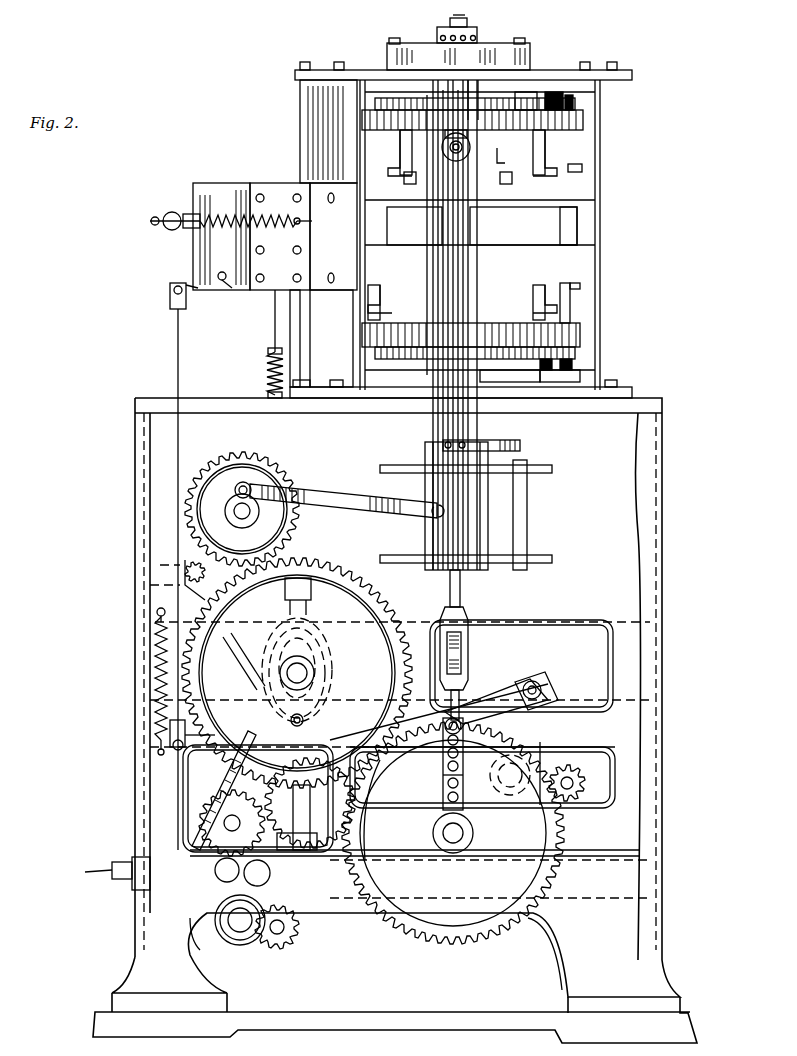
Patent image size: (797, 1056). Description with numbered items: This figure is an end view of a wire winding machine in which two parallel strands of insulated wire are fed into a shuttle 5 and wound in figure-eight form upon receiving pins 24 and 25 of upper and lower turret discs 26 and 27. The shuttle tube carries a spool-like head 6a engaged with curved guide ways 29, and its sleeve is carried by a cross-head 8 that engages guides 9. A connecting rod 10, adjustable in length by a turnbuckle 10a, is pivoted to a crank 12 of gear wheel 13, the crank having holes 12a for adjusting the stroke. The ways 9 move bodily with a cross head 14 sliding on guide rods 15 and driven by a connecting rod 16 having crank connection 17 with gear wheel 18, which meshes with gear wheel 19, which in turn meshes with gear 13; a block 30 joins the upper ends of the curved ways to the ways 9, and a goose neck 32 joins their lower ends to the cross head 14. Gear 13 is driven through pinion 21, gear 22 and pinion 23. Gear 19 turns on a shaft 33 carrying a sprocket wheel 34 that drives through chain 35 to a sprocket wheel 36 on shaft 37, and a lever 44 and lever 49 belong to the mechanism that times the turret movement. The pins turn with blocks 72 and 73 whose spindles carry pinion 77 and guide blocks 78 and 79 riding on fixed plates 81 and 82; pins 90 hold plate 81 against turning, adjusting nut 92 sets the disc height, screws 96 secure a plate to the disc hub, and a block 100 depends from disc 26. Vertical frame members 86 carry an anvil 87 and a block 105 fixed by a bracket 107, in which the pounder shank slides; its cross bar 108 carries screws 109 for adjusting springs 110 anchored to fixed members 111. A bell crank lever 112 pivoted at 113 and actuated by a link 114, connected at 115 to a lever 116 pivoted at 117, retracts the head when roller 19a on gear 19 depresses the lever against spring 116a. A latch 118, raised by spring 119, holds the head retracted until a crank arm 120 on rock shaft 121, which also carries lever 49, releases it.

The shuttle 5 is at (462, 160).
The spool-like head 6a is at (445, 145).
The cross-head 8 is at (433, 180).
The guides 9 is at (435, 230).
The connecting rod 10 is at (462, 588).
The turnbuckle 10a is at (470, 652).
The crank 12 is at (464, 790).
The holes 12a is at (464, 766).
The gear wheel 13 is at (453, 833).
The cross head 14 is at (490, 505).
The guide rods 15 is at (553, 470).
The connecting rod 16 is at (329, 490).
The crank connection 17 is at (240, 492).
The gear wheel 18 is at (235, 490).
The gear wheel 19 is at (297, 673).
The roller 19a is at (312, 722).
The pinion 21 is at (540, 746).
The gear 22 is at (583, 755).
The pinion 23 is at (575, 800).
The receiving pins 24 is at (583, 170).
The receiving pins 25 is at (580, 288).
The turret disc 26 is at (582, 126).
The turret disc 27 is at (580, 338).
The curved guide ways 29 is at (448, 272).
The block 30 is at (473, 112).
The goose neck 32 is at (520, 445).
The shaft 33 is at (303, 670).
The sprocket wheel 34 is at (340, 688).
The chain 35 is at (215, 808).
The sprocket wheel 36 is at (238, 830).
The shaft 37 is at (225, 868).
The lever 44 is at (310, 804).
The lever 49 is at (270, 625).
The block 72 is at (568, 150).
The block 73 is at (568, 307).
The pinion 77 is at (585, 108).
The guide block 78 is at (568, 95).
The guide block 79 is at (562, 370).
The fixed plate 81 is at (528, 92).
The fixed plate 82 is at (518, 370).
The vertical frame members 86 is at (600, 266).
The anvil 87 is at (562, 222).
The pins 90 is at (400, 44).
The adjusting nut 92 is at (445, 29).
The screws 96 is at (404, 178).
The block 100 is at (503, 160).
The block 105 is at (222, 190).
The bracket 107 is at (281, 193).
The cross bar 108 is at (170, 232).
The screws 109 is at (150, 222).
The springs 110 is at (204, 214).
The fixed members 111 is at (306, 222).
The bell crank lever 112 is at (190, 296).
The pivot 113 is at (232, 288).
The link 114 is at (178, 350).
The connection 115 is at (185, 758).
The lever 116 is at (510, 690).
The spring 116a is at (158, 698).
The pivot 117 is at (542, 685).
The latch 118 is at (275, 328).
The spring 119 is at (268, 370).
The crank arm 120 is at (240, 557).
The rock shaft 121 is at (160, 565).